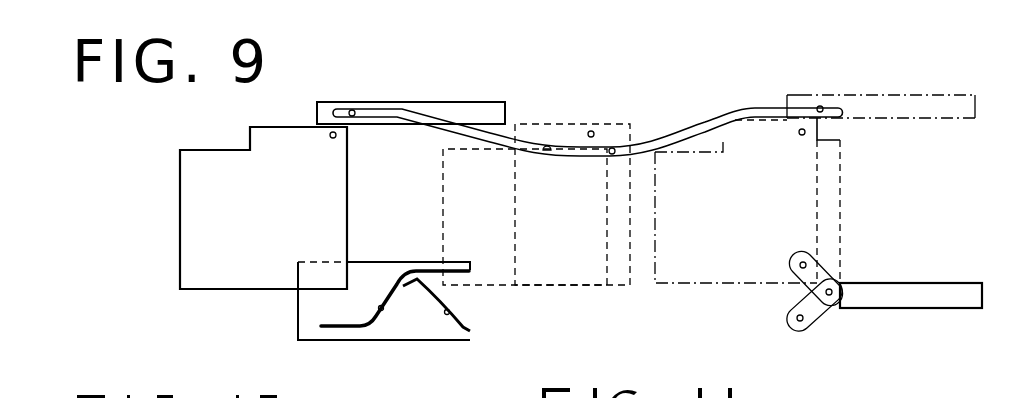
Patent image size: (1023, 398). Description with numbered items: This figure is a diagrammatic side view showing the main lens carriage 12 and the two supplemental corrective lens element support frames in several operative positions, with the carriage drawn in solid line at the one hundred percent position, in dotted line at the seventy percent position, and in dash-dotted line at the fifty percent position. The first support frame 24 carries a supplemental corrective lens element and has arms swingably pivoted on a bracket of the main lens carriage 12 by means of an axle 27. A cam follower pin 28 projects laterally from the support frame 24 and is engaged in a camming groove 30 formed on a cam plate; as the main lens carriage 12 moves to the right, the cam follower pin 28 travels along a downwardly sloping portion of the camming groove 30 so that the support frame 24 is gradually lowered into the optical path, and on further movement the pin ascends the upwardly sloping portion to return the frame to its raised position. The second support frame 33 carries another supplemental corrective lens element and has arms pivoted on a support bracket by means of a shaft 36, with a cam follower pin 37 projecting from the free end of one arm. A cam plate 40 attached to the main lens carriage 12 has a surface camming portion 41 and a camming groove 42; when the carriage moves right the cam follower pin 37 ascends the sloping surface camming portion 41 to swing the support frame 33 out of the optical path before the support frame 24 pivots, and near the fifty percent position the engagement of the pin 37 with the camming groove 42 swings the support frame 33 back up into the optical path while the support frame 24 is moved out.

The main lens carriage 12 is at (200, 228).
The support frame 24 is at (445, 115).
The axle 27 is at (333, 140).
The cam follower pin 28 is at (352, 110).
The camming groove 30 is at (555, 145).
The support frame 33 is at (828, 220).
The shaft 36 is at (840, 309).
The cam follower pin 37 is at (803, 258).
The cam plate 40 is at (312, 316).
The surface camming portion 41 is at (449, 315).
The camming groove 42 is at (381, 312).